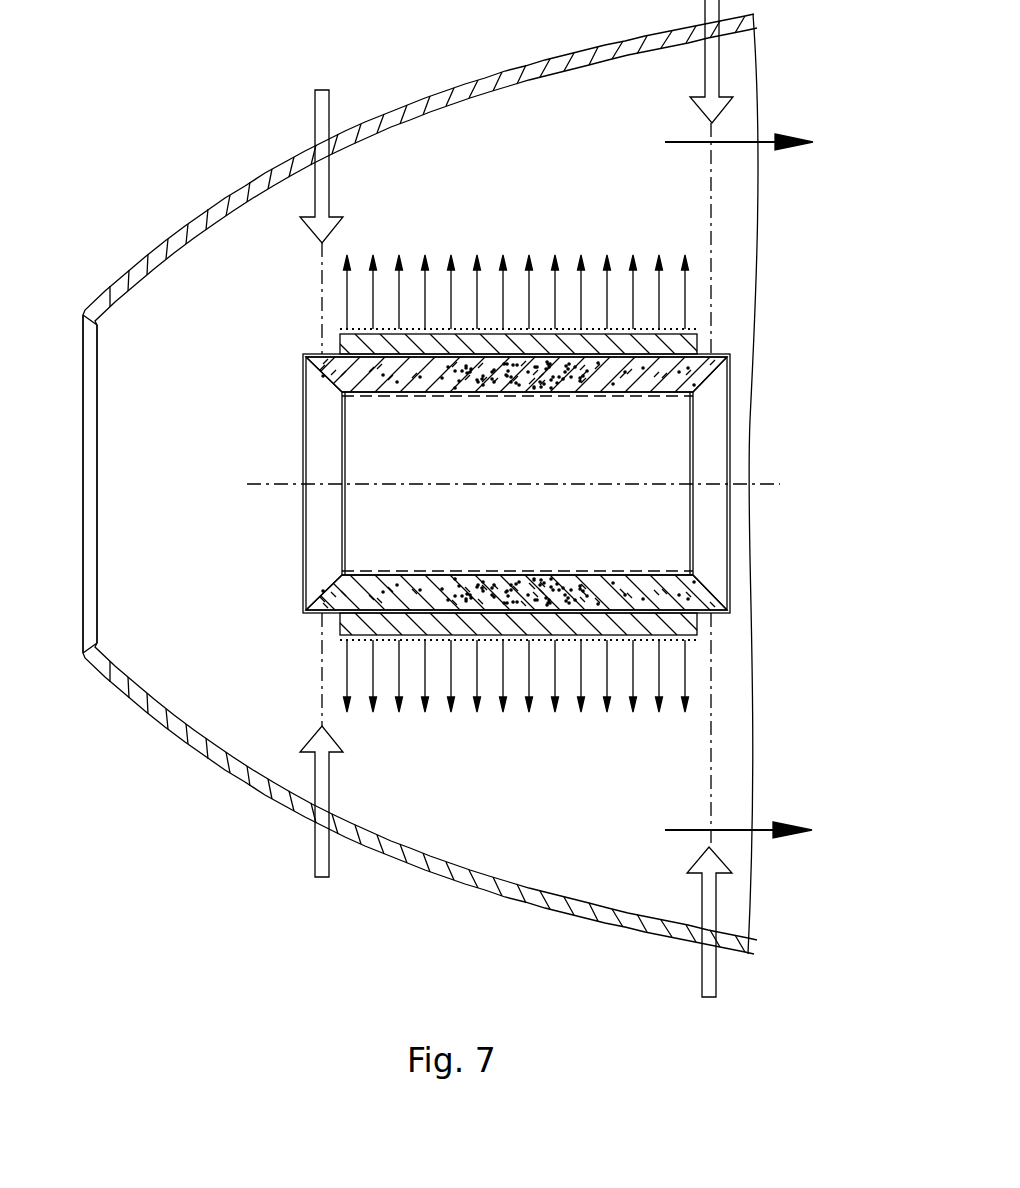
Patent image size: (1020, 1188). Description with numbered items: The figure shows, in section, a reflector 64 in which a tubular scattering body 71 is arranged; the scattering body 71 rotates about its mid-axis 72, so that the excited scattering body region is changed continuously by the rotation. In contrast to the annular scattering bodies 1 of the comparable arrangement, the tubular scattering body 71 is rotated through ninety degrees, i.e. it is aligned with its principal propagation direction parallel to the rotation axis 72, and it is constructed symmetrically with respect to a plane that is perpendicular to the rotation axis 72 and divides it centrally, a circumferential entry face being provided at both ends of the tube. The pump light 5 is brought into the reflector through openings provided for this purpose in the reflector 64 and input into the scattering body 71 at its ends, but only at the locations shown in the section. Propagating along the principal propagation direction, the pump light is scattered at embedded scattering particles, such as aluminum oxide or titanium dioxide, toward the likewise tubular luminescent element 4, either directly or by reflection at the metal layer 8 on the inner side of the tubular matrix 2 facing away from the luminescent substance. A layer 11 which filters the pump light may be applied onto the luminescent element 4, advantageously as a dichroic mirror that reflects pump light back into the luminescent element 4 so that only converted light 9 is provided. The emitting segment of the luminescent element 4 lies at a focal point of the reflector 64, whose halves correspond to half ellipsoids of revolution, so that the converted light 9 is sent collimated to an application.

The scattering body 1 is at (406, 480).
The tubular matrix 2 is at (582, 373).
The luminescent element 4 is at (475, 343).
The pump light 5 is at (320, 127).
The metal layer 8 is at (582, 396).
The converted light 9 is at (425, 285).
The layer which filters the pump light 11 is at (618, 328).
The reflector 64 is at (493, 85).
The tubular scattering body 71 is at (449, 408).
The mid-axis 72 is at (272, 483).